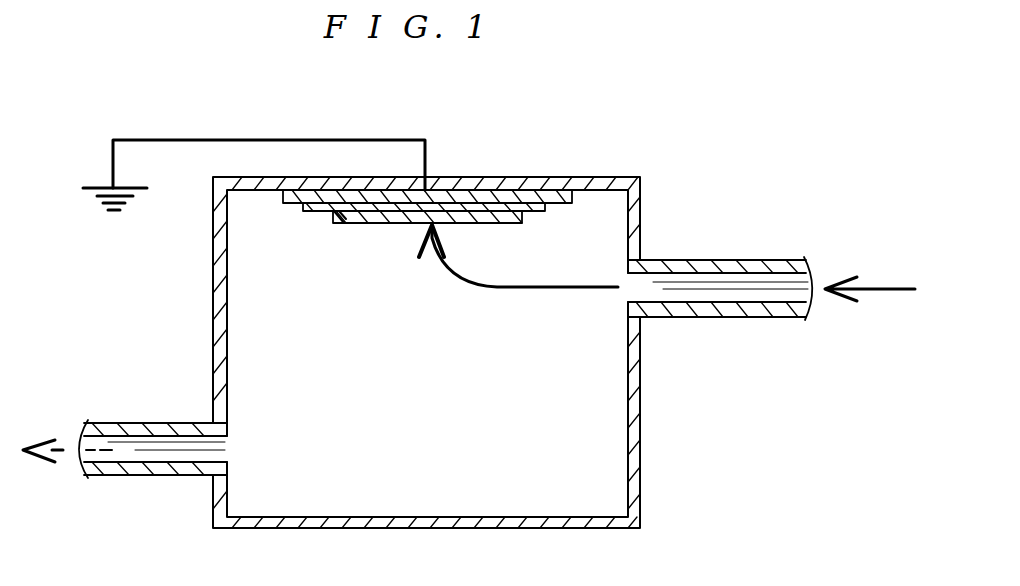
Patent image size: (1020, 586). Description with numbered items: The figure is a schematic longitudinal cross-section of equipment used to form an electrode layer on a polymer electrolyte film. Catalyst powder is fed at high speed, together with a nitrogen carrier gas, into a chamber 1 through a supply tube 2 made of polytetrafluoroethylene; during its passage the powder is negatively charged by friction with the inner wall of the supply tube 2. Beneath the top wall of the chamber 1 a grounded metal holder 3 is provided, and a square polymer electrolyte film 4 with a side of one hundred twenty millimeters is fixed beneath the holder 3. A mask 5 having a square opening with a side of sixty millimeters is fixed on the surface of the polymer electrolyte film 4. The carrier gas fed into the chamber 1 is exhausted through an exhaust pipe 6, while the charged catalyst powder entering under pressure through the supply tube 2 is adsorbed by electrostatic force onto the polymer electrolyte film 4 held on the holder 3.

The chamber 1 is at (617, 178).
The supply tube 2 is at (718, 260).
The metal holder 3 is at (535, 190).
The polymer electrolyte film 4 is at (307, 210).
The mask 5 is at (333, 222).
The exhaust pipe 6 is at (152, 423).